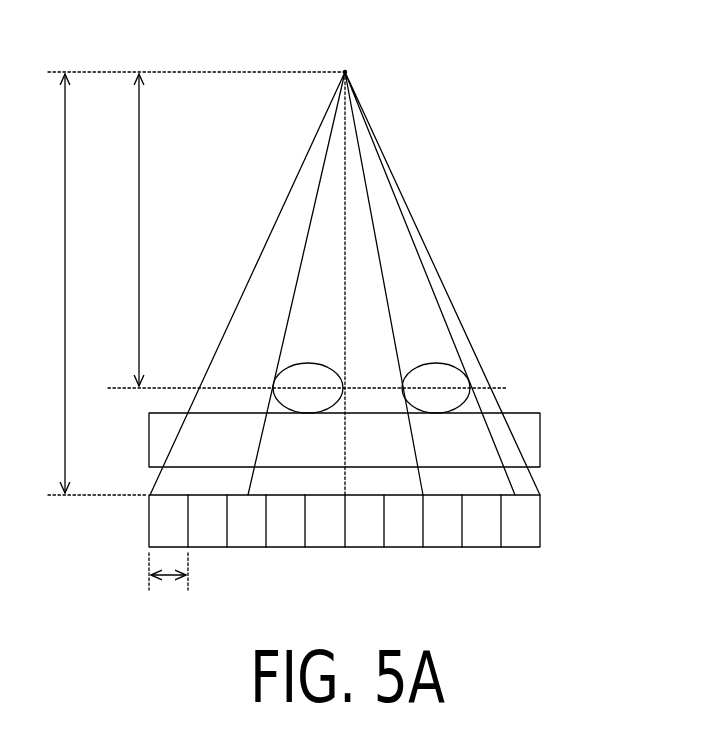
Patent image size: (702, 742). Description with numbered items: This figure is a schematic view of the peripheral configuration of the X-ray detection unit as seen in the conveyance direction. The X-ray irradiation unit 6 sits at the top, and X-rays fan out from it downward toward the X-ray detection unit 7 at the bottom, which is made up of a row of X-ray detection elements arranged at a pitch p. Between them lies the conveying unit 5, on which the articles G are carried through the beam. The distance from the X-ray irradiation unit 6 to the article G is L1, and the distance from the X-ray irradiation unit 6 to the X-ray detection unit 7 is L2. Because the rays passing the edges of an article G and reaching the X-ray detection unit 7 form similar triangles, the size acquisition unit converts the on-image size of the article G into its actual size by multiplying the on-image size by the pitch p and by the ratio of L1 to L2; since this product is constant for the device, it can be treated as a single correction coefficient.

The X-ray irradiation unit 6 is at (349, 68).
The conveying unit 5 is at (542, 425).
The X-ray detection unit 7 is at (542, 511).
The article G is at (307, 362).
The distance from X-ray irradiation unit to article L1 is at (303, 231).
The distance from X-ray irradiation unit to X-ray detection unit L2 is at (186, 283).
The pitch of X-ray detection elements p is at (168, 580).